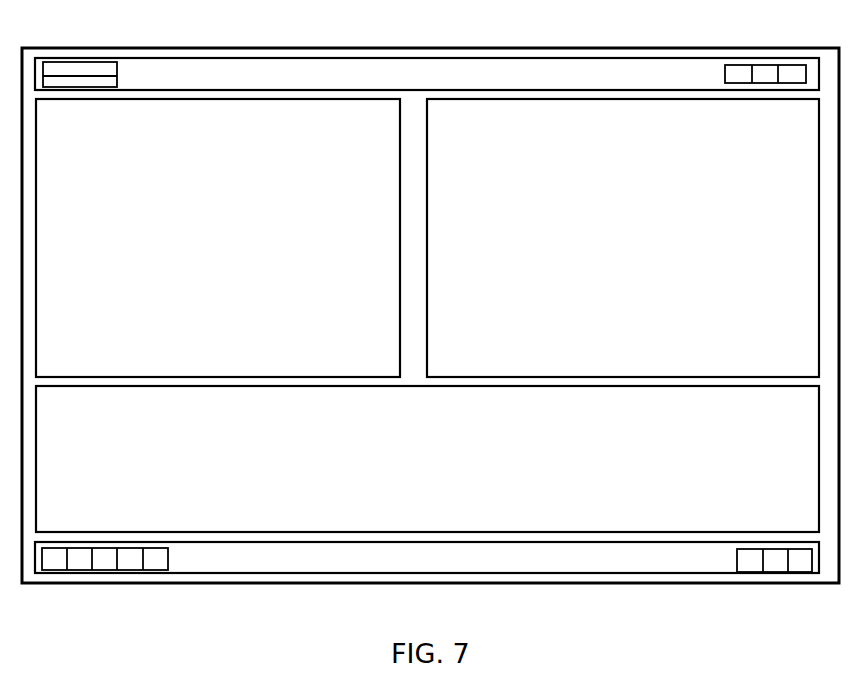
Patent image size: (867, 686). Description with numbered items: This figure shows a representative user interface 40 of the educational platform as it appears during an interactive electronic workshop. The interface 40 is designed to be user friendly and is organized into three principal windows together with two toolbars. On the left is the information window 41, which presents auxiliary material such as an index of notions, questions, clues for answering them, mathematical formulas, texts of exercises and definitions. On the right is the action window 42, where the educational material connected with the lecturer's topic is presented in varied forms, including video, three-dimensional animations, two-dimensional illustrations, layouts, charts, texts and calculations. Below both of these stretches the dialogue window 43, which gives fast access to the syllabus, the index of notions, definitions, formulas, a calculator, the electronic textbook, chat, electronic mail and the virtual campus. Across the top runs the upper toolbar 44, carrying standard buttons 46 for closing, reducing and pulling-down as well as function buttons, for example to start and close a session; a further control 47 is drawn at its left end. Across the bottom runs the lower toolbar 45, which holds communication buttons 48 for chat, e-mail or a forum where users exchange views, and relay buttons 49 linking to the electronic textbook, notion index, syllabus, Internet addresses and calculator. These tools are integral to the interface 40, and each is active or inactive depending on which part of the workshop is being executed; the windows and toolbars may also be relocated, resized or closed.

The user interface 40 is at (348, 48).
The information window 41 is at (231, 253).
The action window 42 is at (638, 253).
The dialogue window 43 is at (439, 457).
The upper toolbar 44 is at (439, 85).
The lower toolbar 45 is at (441, 570).
The standard buttons 46 is at (764, 65).
The upper left indicator 47 is at (77, 66).
The communication buttons 48 is at (779, 572).
The relay buttons 49 is at (82, 570).